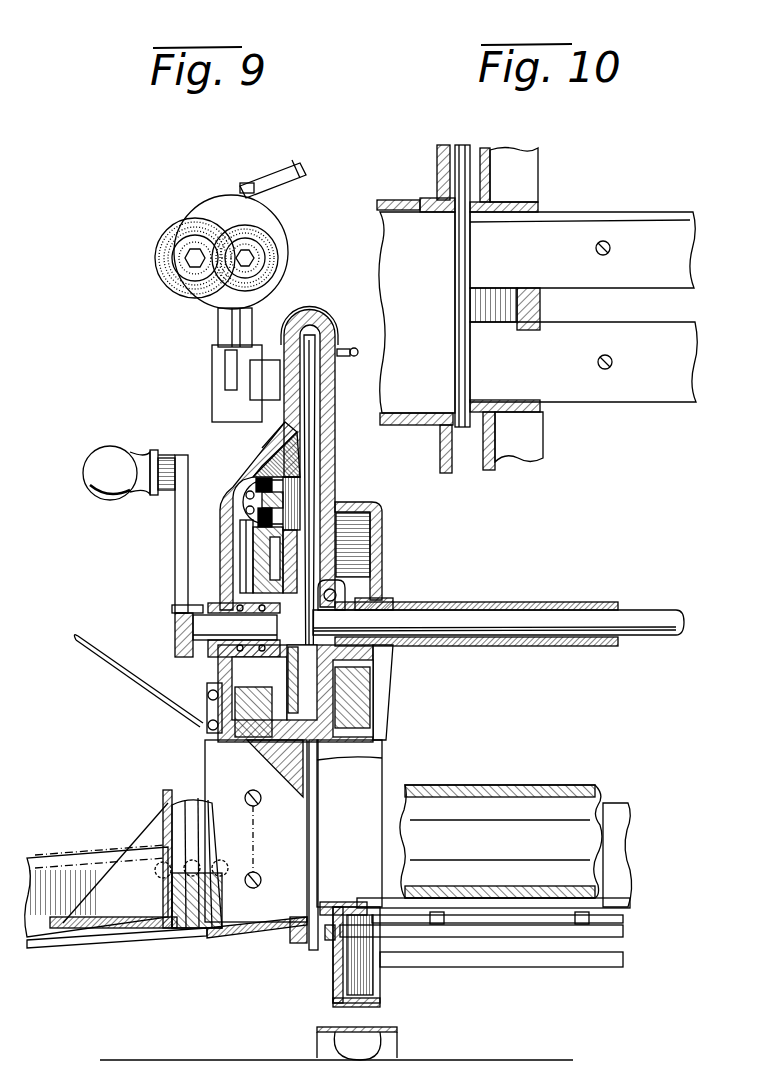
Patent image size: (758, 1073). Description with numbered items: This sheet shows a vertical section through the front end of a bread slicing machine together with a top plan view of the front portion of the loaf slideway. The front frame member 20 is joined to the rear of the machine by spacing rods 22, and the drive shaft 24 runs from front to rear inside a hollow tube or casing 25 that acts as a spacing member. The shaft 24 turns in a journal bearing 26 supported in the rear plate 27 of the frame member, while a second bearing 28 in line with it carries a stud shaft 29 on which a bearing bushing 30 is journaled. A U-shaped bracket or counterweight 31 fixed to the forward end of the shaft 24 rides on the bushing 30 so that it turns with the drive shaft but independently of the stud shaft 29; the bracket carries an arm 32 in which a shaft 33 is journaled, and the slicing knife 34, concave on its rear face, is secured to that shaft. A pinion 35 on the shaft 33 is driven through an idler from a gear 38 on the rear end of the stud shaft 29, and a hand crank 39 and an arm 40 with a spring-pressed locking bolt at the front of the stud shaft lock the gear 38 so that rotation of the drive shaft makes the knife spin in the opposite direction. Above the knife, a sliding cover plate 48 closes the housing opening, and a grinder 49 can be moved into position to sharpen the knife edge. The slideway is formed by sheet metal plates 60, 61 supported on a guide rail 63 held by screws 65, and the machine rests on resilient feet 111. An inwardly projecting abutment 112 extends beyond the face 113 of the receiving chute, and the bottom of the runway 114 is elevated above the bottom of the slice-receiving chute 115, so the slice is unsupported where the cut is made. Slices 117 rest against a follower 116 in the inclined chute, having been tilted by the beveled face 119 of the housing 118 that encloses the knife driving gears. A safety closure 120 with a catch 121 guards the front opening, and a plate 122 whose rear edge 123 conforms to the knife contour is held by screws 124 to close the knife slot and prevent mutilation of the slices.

In FIG. 9, the front frame member 20 is at (368, 770).
In FIG. 9, the spacing rods 22 is at (583, 960).
In FIG. 9, the drive shaft 24 is at (658, 614).
In FIG. 9, the hollow tube or casing 25 is at (550, 602).
In FIG. 9, the journal bearing 26 is at (398, 600).
In FIG. 9, the rear plate 27 is at (394, 688).
In FIG. 9, the second bearing 28 is at (213, 603).
In FIG. 9, the stud shaft 29 is at (220, 653).
In FIG. 9, the bearing bushing 30 is at (262, 592).
In FIG. 9, the U-shaped bracket or counterweight 31 is at (385, 708).
In FIG. 9, the arm 32 is at (255, 543).
In FIG. 9, the shaft 33 is at (272, 470).
In FIG. 9, the slicing knife 34 is at (316, 464).
In FIG. 9, the pinion 35 is at (300, 491).
In FIG. 9, the gear 38 is at (305, 703).
In FIG. 9, the hand crank 39 is at (178, 534).
In FIG. 9, the arm 40 is at (190, 636).
In FIG. 9, the cover plate 48 is at (318, 316).
In FIG. 9, the grinder 49 is at (222, 298).
In FIG. 10, the sheet metal plate 60 is at (666, 388).
In FIG. 9, the sheet metal plate 61 is at (615, 812).
In FIG. 10, the sheet metal plate 61 is at (648, 220).
In FIG. 9, the guide rail 63 is at (540, 928).
In FIG. 9, the screws 65 is at (323, 941).
In FIG. 9, the resilient feet 111 is at (345, 1052).
In FIG. 9, the abutment 112 is at (390, 807).
In FIG. 10, the abutment 112 is at (466, 222).
In FIG. 10, the face of the receiving chute 113 is at (418, 196).
In FIG. 9, the bottom of the runway 114 is at (330, 903).
In FIG. 9, the bottom of the slice-receiving chute 115 is at (285, 930).
In FIG. 9, the follower 116 is at (137, 905).
In FIG. 9, the slices 117 is at (190, 798).
In FIG. 9, the housing 118 is at (252, 470).
In FIG. 9, the beveled face 119 is at (300, 428).
In FIG. 9, the safety closure 120 is at (137, 695).
In FIG. 9, the catch 121 is at (207, 694).
In FIG. 9, the plate 122 is at (230, 763).
In FIG. 10, the plate 122 is at (400, 213).
In FIG. 9, the rear edge 123 is at (390, 807).
In FIG. 9, the screws 124 is at (253, 810).